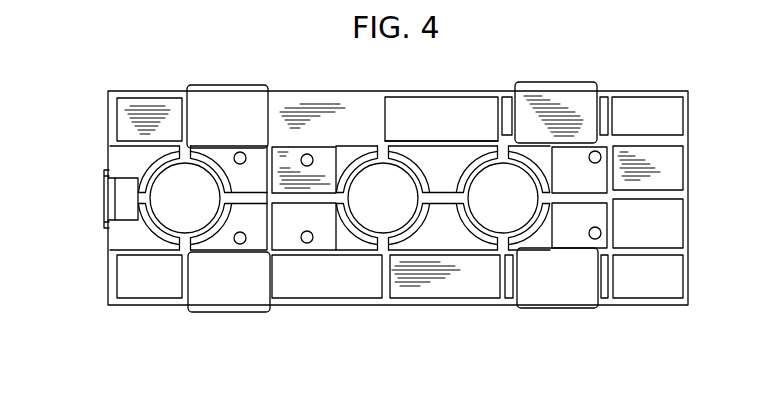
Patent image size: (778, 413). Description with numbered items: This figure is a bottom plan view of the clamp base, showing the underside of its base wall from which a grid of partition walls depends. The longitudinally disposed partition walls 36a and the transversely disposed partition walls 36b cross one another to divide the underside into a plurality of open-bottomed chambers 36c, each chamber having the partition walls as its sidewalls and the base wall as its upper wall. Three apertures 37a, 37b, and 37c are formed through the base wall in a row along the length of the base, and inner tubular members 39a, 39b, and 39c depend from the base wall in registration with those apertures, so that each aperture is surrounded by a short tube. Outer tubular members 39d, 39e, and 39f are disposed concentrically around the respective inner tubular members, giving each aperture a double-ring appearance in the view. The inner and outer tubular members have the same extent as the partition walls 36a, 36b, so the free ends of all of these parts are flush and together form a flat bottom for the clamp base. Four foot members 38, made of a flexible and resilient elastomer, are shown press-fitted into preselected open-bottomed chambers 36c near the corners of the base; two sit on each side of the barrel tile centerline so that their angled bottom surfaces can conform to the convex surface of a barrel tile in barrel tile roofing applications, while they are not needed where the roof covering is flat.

The longitudinally disposed partition wall 36a is at (148, 140).
The transversely disposed partition wall 36b is at (612, 113).
The open-bottomed chamber 36c is at (643, 170).
The aperture 37a is at (160, 228).
The aperture 37b is at (388, 235).
The aperture 37c is at (510, 224).
The foot member 38 is at (228, 113).
The inner tubular member 39a is at (160, 246).
The inner tubular member 39b is at (362, 178).
The inner tubular member 39c is at (528, 165).
The outer tubular member 39d is at (150, 170).
The outer tubular member 39e is at (362, 243).
The outer tubular member 39f is at (480, 142).